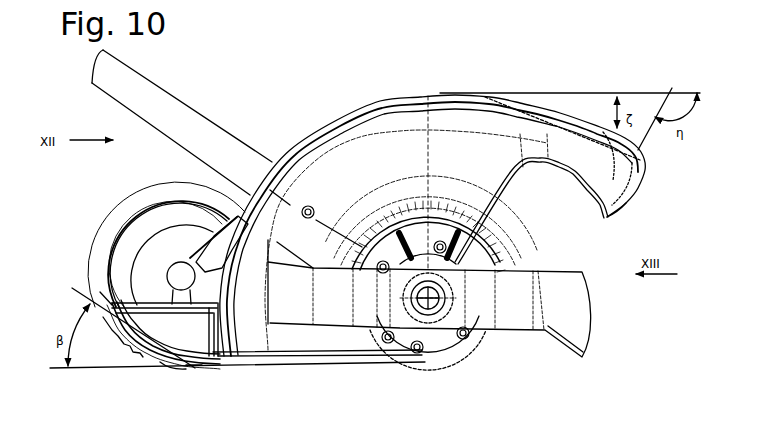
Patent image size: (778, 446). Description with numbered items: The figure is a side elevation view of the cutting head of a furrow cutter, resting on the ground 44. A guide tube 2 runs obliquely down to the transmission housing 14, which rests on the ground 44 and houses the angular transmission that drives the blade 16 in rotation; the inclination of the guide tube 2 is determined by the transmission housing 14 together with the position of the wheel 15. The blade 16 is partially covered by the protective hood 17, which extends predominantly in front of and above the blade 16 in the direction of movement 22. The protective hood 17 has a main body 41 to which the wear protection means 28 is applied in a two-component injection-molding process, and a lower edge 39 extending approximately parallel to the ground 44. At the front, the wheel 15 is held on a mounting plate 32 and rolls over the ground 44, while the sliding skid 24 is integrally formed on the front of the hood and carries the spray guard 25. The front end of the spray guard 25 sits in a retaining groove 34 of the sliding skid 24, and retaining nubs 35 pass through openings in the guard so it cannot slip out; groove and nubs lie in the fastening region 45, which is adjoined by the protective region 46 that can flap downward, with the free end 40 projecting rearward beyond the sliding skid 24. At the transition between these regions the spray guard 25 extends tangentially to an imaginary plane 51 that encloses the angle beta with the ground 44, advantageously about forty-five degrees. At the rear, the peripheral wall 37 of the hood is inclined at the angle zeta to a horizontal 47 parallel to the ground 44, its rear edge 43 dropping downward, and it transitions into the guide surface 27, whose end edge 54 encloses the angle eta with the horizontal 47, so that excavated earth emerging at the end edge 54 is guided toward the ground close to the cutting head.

The guide tube 2 is at (170, 115).
The transmission housing 14 is at (442, 353).
The wheel 15 is at (105, 248).
The blade 16 is at (527, 312).
The protective hood 17 is at (465, 79).
The direction of movement 22 is at (335, 378).
The sliding skid 24 is at (178, 323).
The spray guard 25 is at (192, 364).
The guide surface 27 is at (600, 180).
The wear protection means 28 is at (337, 130).
The mounting plate 32 is at (218, 233).
The retaining groove 34 is at (110, 298).
The retaining nubs 35 is at (129, 250).
The peripheral wall 37 is at (527, 108).
The lower edge 39 is at (262, 357).
The free end 40 is at (227, 367).
The main body 41 is at (393, 101).
The rear edge 43 is at (578, 165).
The ground 44 is at (393, 362).
The fastening region 45 is at (128, 338).
The protective region 46 is at (172, 369).
The horizontal 47 is at (560, 93).
The imaginary plane 51 is at (85, 300).
The end edge 54 is at (622, 185).